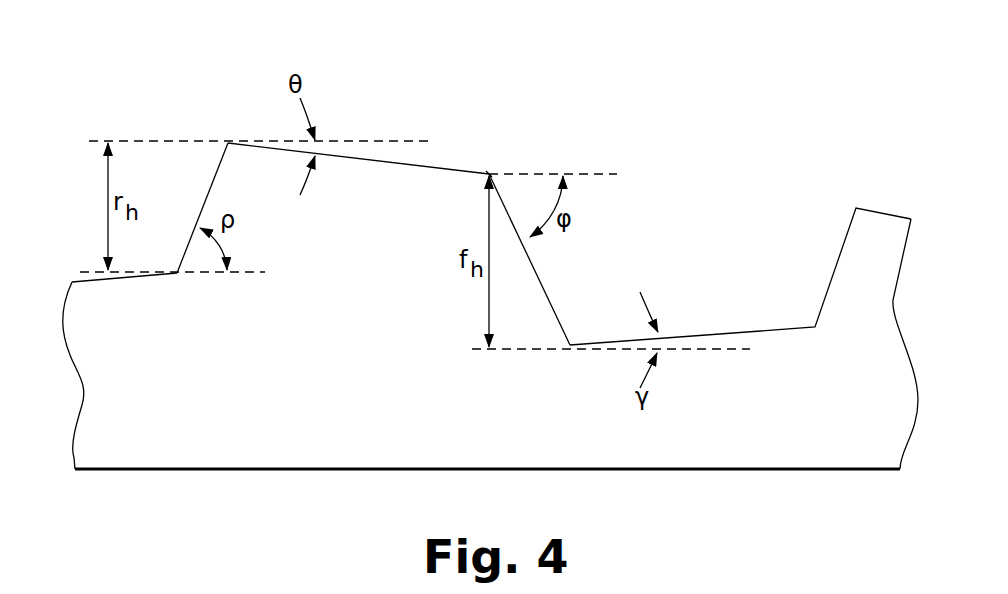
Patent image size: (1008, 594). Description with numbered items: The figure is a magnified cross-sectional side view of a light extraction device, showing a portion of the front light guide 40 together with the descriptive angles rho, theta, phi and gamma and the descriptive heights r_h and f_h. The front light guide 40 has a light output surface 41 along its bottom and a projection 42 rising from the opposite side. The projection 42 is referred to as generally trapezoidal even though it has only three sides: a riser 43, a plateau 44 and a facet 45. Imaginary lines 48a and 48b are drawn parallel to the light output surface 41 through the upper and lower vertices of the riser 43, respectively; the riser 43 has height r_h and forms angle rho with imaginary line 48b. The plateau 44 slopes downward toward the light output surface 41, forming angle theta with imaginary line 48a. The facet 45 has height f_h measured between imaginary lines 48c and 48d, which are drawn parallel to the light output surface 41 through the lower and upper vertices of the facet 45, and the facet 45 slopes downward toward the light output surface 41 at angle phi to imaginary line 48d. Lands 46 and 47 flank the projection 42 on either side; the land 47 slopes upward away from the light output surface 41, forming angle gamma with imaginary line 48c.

The front light guide 40 is at (420, 107).
The light output surface 41 is at (423, 470).
The projection 42 is at (448, 192).
The riser 43 is at (212, 177).
The plateau 44 is at (383, 162).
The facet 45 is at (545, 285).
The land 46 is at (103, 283).
The land 47 is at (785, 332).
The imaginary line 48a is at (118, 140).
The imaginary line 48b is at (339, 336).
The imaginary line 48c is at (735, 350).
The imaginary line 48d is at (588, 172).